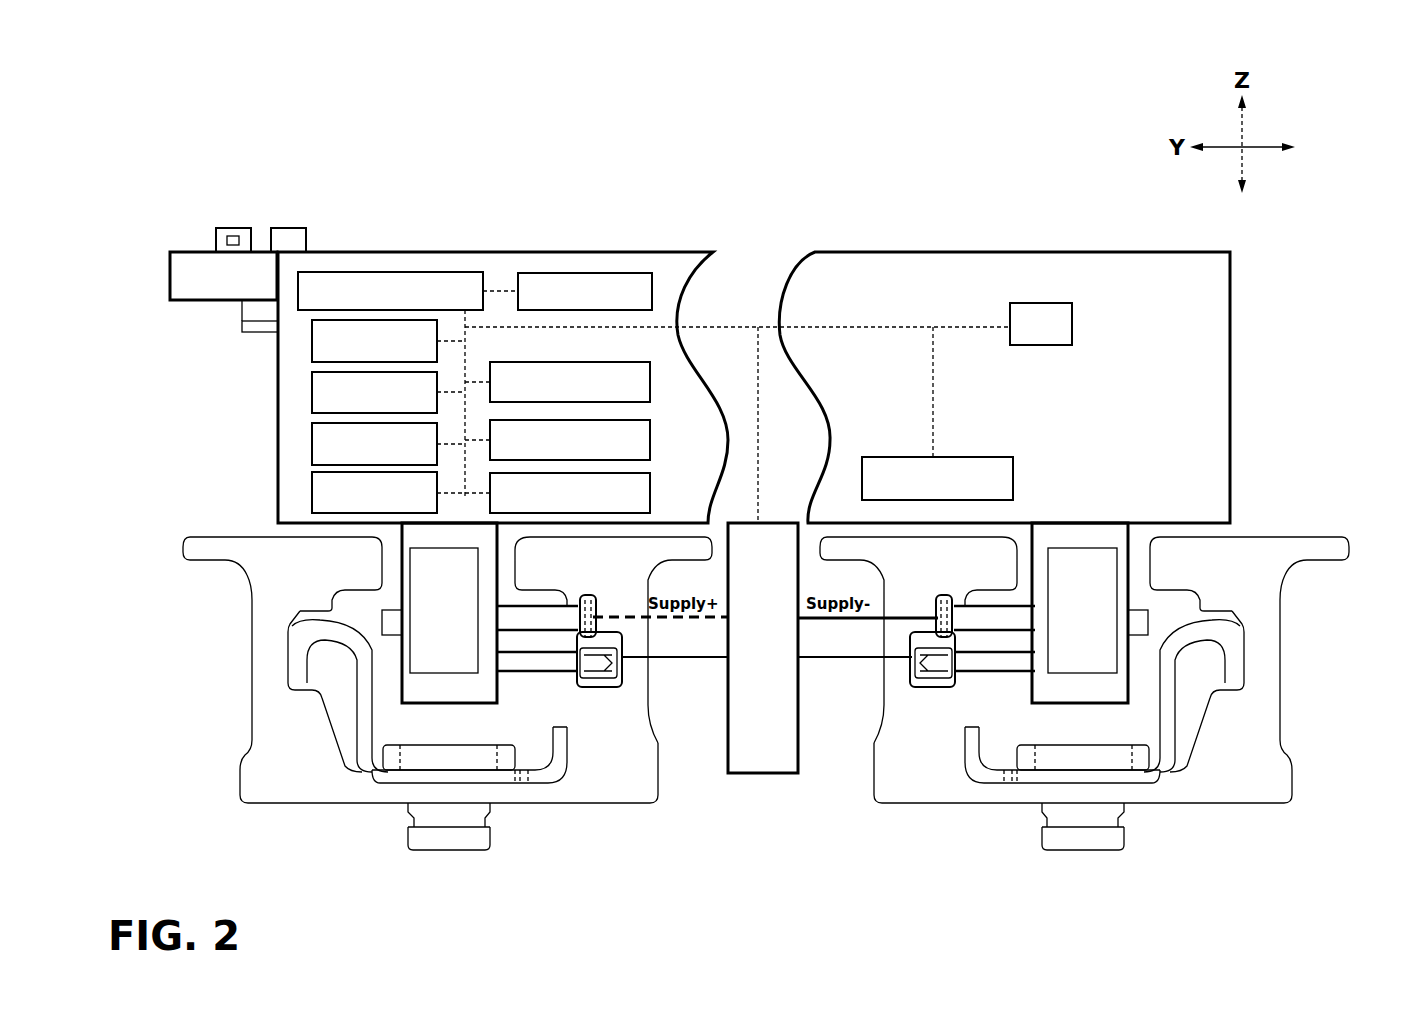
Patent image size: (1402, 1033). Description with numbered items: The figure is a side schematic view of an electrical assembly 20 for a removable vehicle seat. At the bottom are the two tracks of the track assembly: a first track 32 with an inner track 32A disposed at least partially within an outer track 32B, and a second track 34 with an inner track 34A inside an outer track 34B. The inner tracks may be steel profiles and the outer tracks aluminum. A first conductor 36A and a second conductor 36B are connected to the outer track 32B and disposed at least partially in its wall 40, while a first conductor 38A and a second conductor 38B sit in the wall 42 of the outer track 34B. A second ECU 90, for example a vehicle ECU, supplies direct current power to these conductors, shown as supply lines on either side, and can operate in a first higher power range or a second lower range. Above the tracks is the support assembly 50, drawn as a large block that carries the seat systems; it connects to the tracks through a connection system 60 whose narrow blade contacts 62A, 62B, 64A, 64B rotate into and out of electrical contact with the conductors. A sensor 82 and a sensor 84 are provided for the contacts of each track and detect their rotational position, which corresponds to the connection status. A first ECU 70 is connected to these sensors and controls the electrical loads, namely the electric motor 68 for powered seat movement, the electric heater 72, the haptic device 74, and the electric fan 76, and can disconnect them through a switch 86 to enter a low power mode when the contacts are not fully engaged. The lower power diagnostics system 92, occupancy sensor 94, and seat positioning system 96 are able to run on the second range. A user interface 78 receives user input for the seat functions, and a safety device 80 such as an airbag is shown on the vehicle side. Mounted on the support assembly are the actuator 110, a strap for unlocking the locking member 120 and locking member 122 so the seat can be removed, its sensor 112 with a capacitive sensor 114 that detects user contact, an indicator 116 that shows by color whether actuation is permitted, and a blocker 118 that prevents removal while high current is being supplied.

The electrical assembly 20 is at (420, 100).
The first track 32 is at (193, 578).
The inner track 32A is at (358, 727).
The outer track 32B is at (283, 563).
The second track 34 is at (1330, 530).
The inner track 34A is at (1172, 738).
The outer track 34B is at (1258, 632).
The first conductor 36A is at (597, 600).
The second conductor 36B is at (622, 680).
The first conductor 38A is at (935, 600).
The second conductor 38B is at (910, 682).
The wall 40 is at (628, 757).
The wall 42 is at (890, 762).
The support assembly 50 is at (1023, 222).
The connection system 60 is at (500, 722).
The contact 62A is at (540, 625).
The contact 62B is at (550, 662).
The contact 64A is at (975, 620).
The contact 64B is at (987, 660).
The electric motor 68 is at (312, 340).
The first electronic control unit 70 is at (480, 272).
The electric heater 72 is at (312, 392).
The haptic device 74 is at (312, 443).
The electric fan 76 is at (312, 495).
The user interface 78 is at (1072, 318).
The safety device 80 is at (1013, 478).
The sensor 82 is at (423, 545).
The sensor 84 is at (1097, 545).
The switch 86 is at (620, 272).
The second electronic control unit 90 is at (765, 742).
The diagnostics system 92 is at (650, 492).
The occupancy sensor 94 is at (650, 380).
The seat positioning system 96 is at (650, 440).
The actuator 110 is at (170, 282).
The sensor 112 is at (237, 222).
The capacitive sensor 114 is at (224, 240).
The indicator 116 is at (240, 329).
The blocker 118 is at (292, 221).
The locking member 120 is at (310, 616).
The locking member 122 is at (1200, 600).